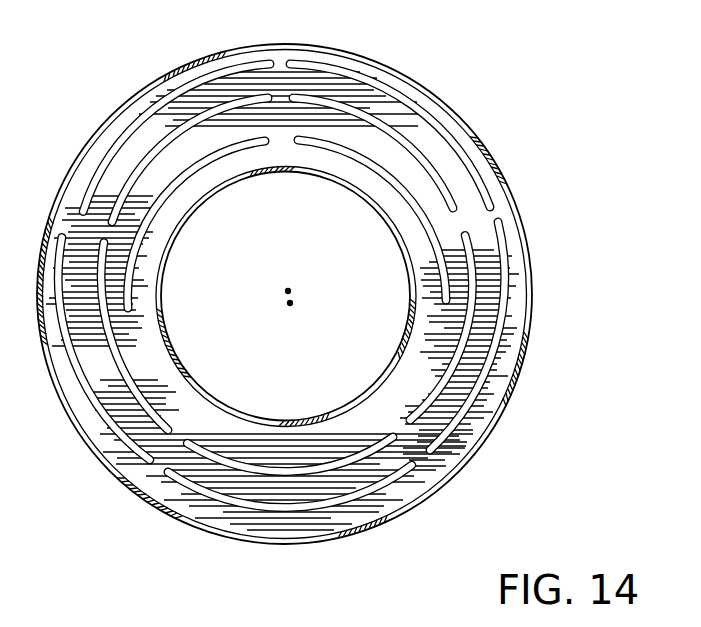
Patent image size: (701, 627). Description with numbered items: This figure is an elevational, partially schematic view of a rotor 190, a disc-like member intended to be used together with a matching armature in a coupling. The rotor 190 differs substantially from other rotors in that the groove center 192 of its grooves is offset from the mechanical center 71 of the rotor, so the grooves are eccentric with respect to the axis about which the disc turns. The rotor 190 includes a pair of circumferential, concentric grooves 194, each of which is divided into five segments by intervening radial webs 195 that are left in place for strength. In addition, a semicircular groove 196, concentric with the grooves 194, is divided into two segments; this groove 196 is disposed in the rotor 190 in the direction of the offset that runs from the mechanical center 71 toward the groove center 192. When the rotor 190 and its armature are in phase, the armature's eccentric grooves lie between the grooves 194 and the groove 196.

The rotor 190 is at (507, 181).
The groove center 192 is at (291, 288).
The mechanical center 71 is at (296, 302).
The circumferential concentric grooves 194 is at (385, 125).
The radial webs 195 is at (273, 60).
The semicircular groove 196 is at (327, 140).